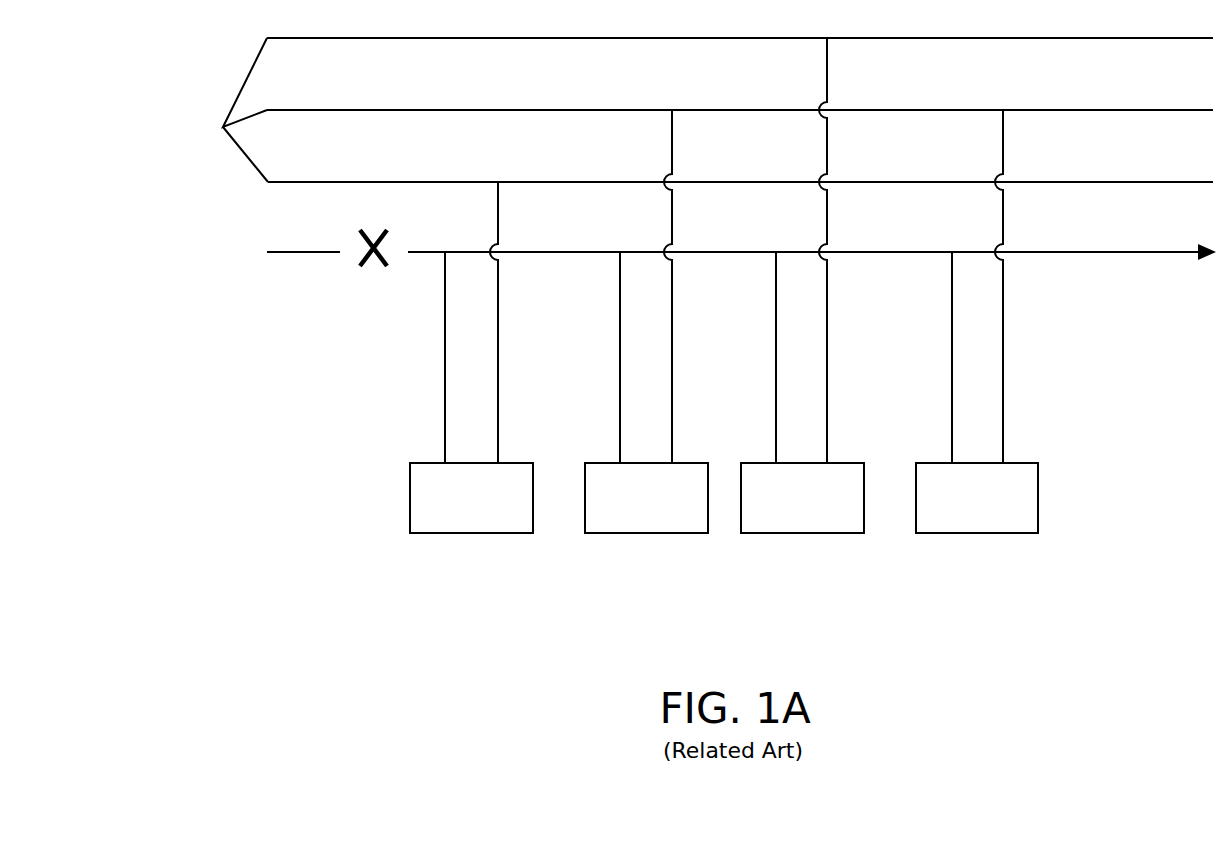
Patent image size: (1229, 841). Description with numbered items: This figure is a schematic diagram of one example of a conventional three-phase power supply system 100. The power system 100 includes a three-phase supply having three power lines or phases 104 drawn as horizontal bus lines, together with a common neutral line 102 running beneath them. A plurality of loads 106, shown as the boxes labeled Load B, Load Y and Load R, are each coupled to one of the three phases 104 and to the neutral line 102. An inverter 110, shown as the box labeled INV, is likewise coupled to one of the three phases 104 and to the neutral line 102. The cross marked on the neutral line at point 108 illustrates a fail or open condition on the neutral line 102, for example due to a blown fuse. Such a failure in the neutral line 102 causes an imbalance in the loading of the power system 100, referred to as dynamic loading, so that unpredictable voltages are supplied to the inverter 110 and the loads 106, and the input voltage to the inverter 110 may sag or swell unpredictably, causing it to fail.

The power system 100 is at (294, 577).
The neutral line 102 is at (267, 252).
The power lines/phases 104 is at (695, 110).
The loads 106 is at (485, 533).
The point 108 is at (373, 270).
The inverter 110 is at (985, 533).